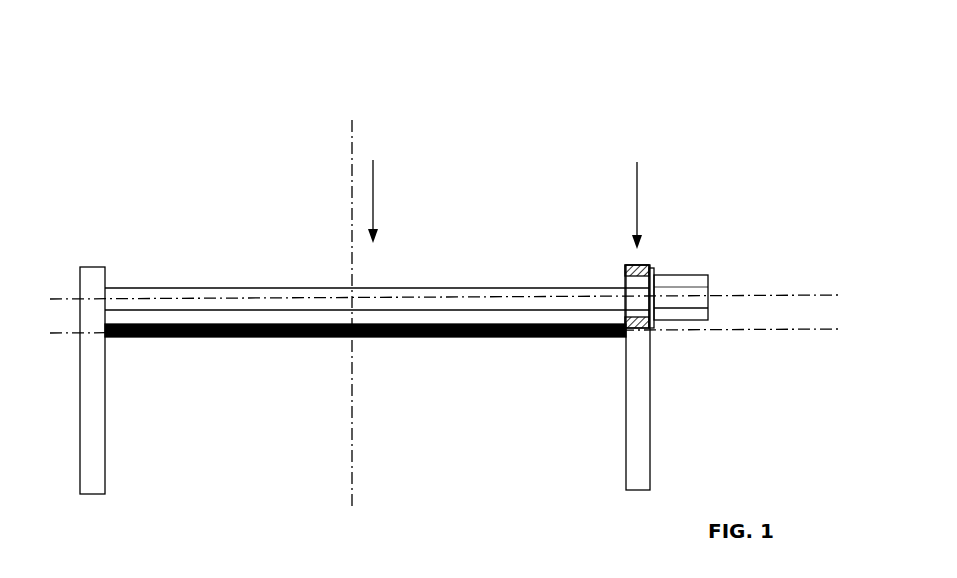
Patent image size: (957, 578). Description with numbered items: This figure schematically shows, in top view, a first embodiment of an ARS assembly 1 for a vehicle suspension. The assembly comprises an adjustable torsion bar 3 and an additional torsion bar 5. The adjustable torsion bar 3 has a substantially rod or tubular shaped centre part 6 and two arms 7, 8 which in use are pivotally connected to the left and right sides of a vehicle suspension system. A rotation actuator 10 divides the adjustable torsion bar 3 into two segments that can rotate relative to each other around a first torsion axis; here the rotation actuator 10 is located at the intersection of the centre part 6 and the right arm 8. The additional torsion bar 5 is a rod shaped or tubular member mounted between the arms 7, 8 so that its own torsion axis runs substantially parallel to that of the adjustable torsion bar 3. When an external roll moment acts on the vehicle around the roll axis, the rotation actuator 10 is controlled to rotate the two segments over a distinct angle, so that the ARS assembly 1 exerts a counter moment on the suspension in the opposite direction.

The ARS assembly 1 is at (174, 129).
The adjustable torsion bar 3 is at (748, 237).
The additional torsion bar 5 is at (216, 337).
The centre part 6 is at (220, 288).
The arm 7 is at (93, 423).
The arm 8 is at (637, 416).
The rotation actuator 10 is at (681, 280).